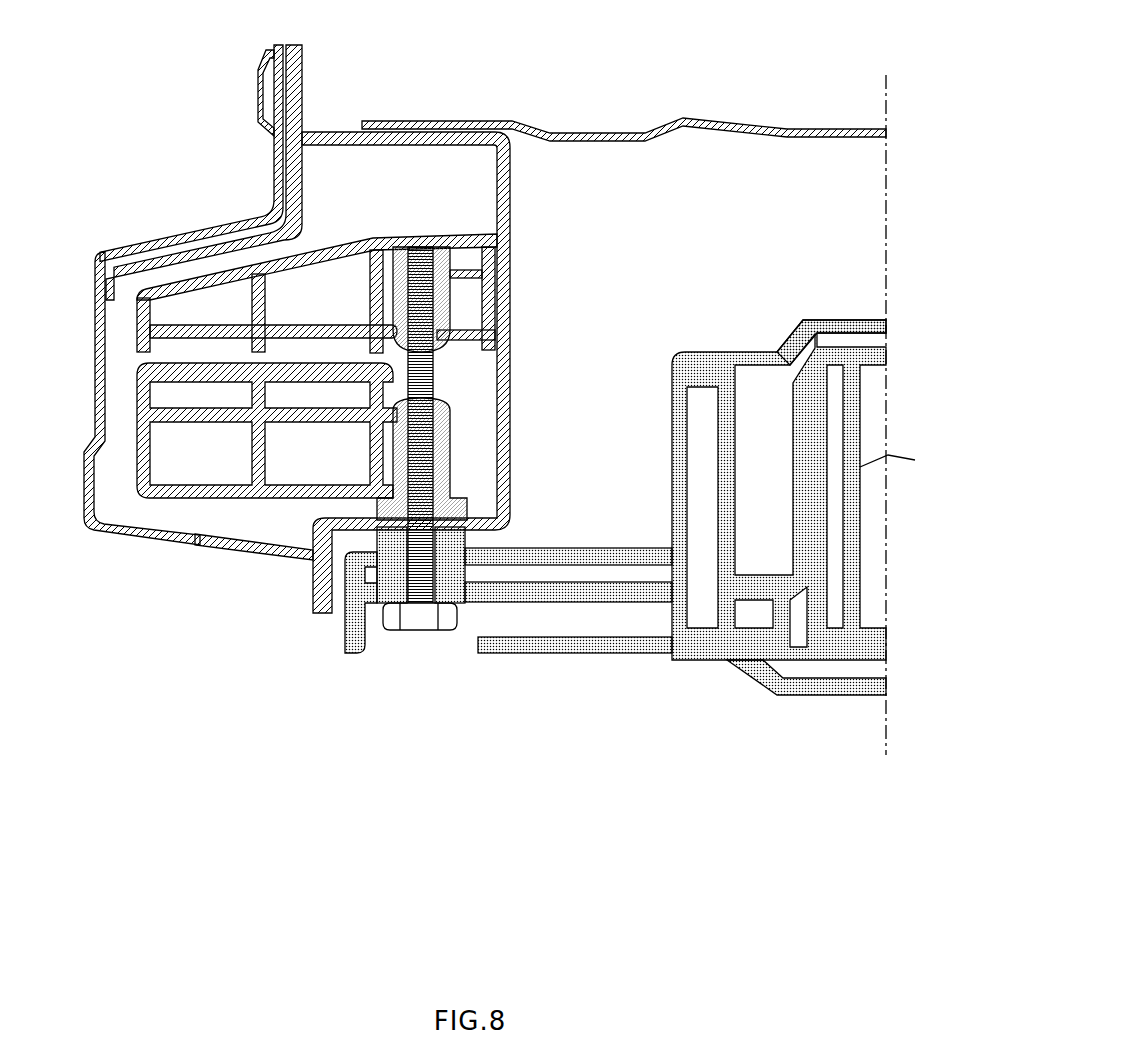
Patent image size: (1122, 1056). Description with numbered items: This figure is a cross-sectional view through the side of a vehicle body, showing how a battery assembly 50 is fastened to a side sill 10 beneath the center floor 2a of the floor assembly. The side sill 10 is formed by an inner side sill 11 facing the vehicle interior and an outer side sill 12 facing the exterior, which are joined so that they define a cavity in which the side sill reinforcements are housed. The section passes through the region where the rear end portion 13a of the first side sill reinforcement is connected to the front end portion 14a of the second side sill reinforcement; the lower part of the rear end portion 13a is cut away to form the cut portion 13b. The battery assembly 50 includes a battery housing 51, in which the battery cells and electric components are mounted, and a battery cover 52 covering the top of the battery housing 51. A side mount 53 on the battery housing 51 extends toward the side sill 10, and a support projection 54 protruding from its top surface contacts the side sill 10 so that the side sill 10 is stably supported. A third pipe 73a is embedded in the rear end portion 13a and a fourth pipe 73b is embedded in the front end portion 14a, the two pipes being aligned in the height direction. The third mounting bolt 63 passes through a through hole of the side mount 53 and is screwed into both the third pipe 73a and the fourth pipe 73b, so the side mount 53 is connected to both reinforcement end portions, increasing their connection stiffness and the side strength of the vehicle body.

The center floor 2a is at (803, 129).
The side sill 10 is at (90, 551).
The inner side sill 11 is at (510, 168).
The outer side sill 12 is at (95, 398).
The rear end portion 13a is at (405, 236).
The cut portion 13b is at (124, 354).
The front end portion 14a is at (200, 500).
The battery assembly 50 is at (728, 322).
The battery housing 51 is at (727, 655).
The battery cover 52 is at (822, 318).
The side mount 53 is at (558, 646).
The support projection 54 is at (460, 535).
The third mounting bolt 63 is at (433, 462).
The third pipe 73a is at (445, 310).
The fourth pipe 73b is at (445, 441).